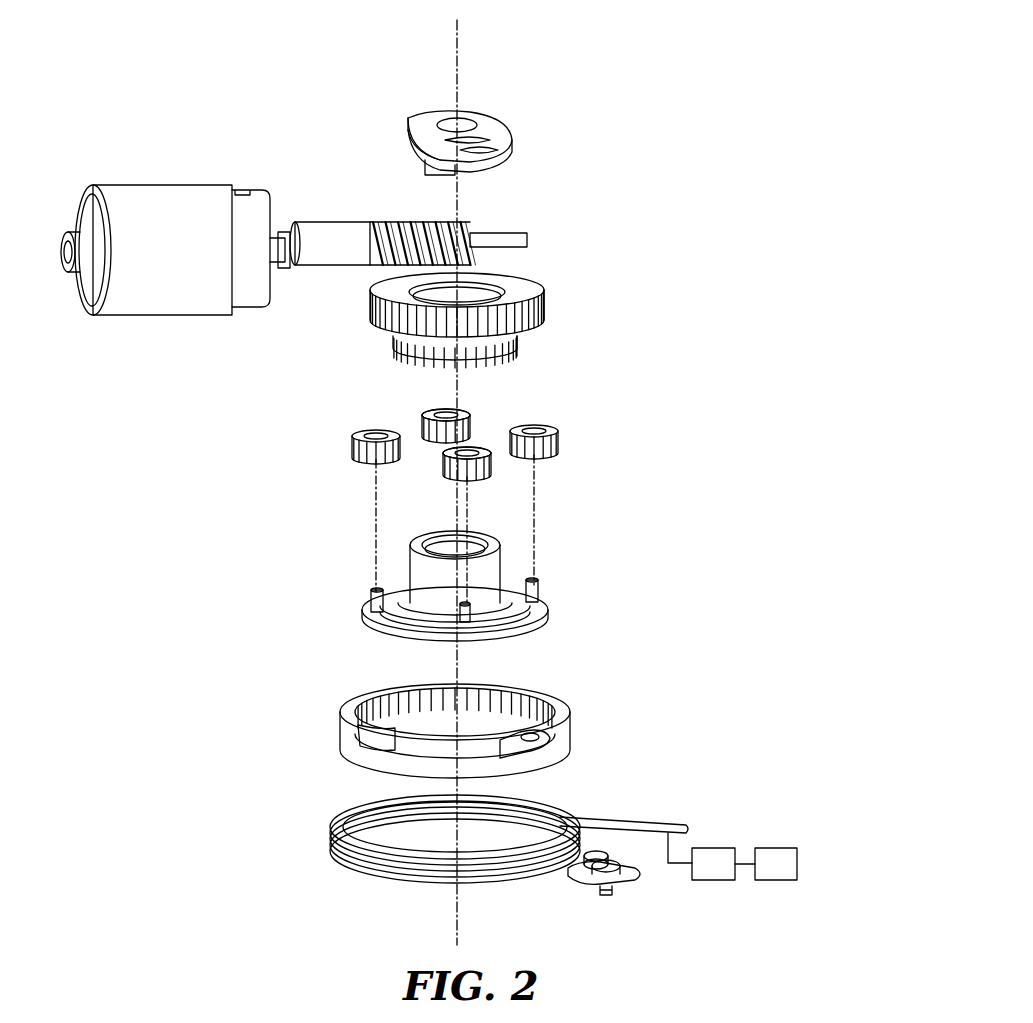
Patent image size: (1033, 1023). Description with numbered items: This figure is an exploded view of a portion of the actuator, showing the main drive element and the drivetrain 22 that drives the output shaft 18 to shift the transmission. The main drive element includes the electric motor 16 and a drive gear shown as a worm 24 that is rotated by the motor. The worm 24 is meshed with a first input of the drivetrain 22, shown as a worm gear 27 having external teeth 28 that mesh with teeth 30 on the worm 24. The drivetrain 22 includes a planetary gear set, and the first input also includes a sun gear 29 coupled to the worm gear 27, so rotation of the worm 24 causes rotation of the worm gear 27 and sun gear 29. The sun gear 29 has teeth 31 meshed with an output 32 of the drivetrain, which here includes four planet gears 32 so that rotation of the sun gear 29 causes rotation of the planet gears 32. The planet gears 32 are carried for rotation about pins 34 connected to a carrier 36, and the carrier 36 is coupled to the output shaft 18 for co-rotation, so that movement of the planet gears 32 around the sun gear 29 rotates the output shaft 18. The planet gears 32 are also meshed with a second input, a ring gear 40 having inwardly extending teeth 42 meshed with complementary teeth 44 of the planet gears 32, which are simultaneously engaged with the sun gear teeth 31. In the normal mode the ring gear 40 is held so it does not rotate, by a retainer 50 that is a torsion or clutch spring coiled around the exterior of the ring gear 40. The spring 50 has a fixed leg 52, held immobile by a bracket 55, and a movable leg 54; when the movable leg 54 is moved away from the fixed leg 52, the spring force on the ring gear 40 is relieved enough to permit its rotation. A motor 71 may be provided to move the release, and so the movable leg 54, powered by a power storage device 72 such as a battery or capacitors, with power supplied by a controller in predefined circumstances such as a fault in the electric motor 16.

The electric motor 16 is at (182, 200).
The output shaft 18 is at (501, 104).
The drivetrain 22 is at (665, 68).
The worm 24 is at (378, 210).
The worm gear 27 is at (556, 283).
The external teeth 28 is at (545, 313).
The sun gear 29 is at (566, 298).
The teeth 30 is at (401, 228).
The teeth 31 is at (500, 352).
The planet gears 32 is at (356, 432).
The pins 34 is at (372, 598).
The carrier 36 is at (606, 598).
The ring gear 40 is at (587, 727).
The inwardly extending teeth 42 is at (506, 706).
The complementary teeth 44 is at (425, 426).
The retainer 50 is at (704, 900).
The fixed leg 52 is at (562, 876).
The movable leg 54 is at (665, 822).
The bracket 55 is at (640, 873).
The motor 71 is at (718, 853).
The power storage device 72 is at (781, 853).